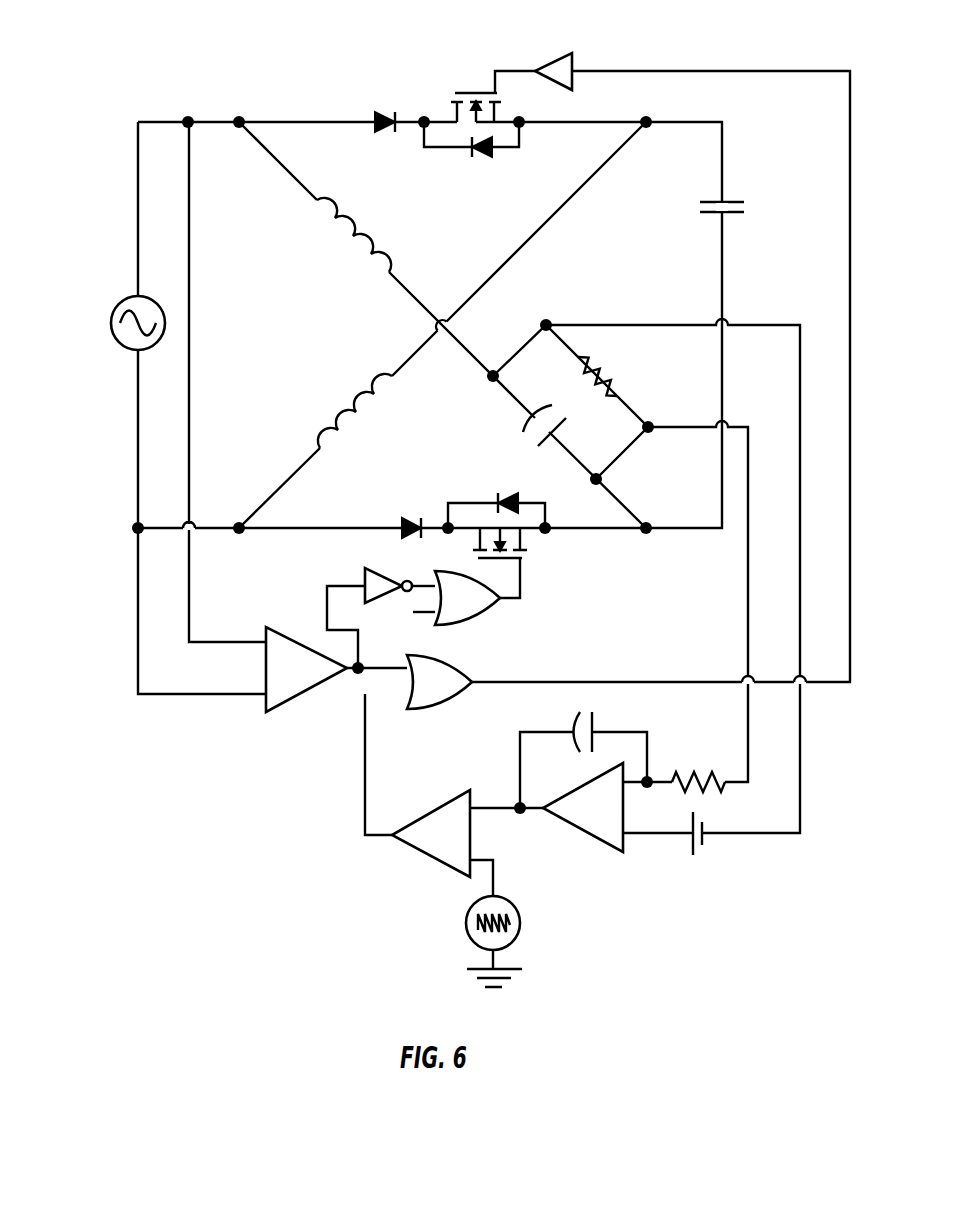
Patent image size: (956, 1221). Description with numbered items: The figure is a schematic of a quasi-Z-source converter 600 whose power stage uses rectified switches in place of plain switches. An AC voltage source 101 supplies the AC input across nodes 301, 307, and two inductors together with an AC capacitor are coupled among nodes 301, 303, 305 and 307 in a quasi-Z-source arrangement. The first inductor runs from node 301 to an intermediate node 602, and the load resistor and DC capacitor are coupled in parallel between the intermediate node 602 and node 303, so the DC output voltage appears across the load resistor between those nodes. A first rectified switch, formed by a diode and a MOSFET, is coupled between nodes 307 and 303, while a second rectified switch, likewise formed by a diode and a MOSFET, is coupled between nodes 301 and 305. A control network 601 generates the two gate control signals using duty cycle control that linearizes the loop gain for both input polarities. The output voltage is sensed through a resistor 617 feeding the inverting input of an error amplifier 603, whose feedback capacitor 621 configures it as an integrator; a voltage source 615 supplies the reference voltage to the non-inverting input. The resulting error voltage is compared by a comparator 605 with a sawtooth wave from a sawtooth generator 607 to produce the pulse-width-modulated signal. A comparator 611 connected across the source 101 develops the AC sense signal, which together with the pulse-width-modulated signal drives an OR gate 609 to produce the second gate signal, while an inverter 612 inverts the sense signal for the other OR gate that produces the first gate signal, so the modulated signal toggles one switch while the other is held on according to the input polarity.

The quasi-Z-source converter 600 is at (448, 36).
The control network 601 is at (295, 777).
The AC voltage source 101 is at (125, 300).
The node 301 is at (241, 120).
The node 303 is at (649, 530).
The node 305 is at (648, 120).
The node 307 is at (240, 530).
The intermediate node 602 is at (495, 372).
The error amplifier 603 is at (605, 820).
The comparator 605 is at (458, 847).
The sawtooth generator 607 is at (500, 897).
The OR gate 609 is at (485, 610).
The comparator 611 is at (313, 680).
The inverter 612 is at (380, 567).
The voltage source 615 is at (705, 828).
The resistor 617 is at (683, 770).
The capacitor 621 is at (600, 720).